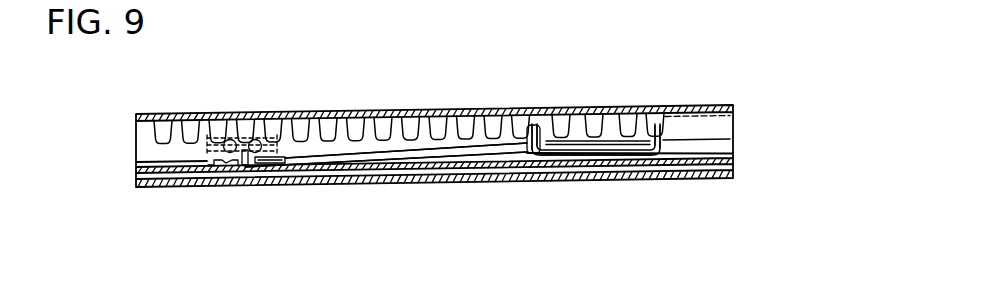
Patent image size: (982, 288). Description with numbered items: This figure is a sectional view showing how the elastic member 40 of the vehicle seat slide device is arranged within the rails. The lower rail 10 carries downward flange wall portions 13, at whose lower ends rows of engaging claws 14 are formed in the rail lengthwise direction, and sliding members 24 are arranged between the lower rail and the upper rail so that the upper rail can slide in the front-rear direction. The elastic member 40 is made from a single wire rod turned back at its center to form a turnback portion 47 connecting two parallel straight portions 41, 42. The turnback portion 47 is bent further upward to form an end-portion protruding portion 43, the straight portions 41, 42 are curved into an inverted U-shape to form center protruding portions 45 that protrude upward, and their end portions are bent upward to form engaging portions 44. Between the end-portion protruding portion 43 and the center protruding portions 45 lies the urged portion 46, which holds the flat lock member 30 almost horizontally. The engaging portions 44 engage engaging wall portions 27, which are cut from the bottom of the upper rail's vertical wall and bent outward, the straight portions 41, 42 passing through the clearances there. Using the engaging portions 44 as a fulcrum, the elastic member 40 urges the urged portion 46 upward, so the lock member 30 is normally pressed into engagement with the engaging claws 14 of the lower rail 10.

The lower rail 10 is at (317, 106).
The flange wall portion 13 is at (392, 118).
The engaging claw 14 is at (612, 139).
The sliding member 24 is at (214, 170).
The engaging wall portion 27 is at (280, 142).
The lock member 30 is at (597, 130).
The elastic member 40 is at (397, 166).
The straight portion 41 is at (454, 153).
The straight portion 42 is at (386, 159).
The end-portion protruding portion 43 is at (659, 136).
The engaging portion 44 is at (230, 139).
The center protruding portion 45 is at (537, 125).
The urged portion 46 is at (626, 150).
The turnback portion 47 is at (664, 141).